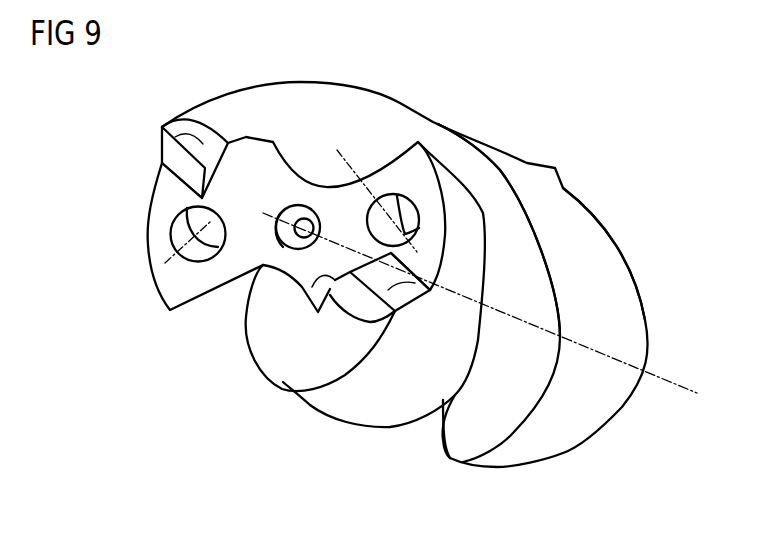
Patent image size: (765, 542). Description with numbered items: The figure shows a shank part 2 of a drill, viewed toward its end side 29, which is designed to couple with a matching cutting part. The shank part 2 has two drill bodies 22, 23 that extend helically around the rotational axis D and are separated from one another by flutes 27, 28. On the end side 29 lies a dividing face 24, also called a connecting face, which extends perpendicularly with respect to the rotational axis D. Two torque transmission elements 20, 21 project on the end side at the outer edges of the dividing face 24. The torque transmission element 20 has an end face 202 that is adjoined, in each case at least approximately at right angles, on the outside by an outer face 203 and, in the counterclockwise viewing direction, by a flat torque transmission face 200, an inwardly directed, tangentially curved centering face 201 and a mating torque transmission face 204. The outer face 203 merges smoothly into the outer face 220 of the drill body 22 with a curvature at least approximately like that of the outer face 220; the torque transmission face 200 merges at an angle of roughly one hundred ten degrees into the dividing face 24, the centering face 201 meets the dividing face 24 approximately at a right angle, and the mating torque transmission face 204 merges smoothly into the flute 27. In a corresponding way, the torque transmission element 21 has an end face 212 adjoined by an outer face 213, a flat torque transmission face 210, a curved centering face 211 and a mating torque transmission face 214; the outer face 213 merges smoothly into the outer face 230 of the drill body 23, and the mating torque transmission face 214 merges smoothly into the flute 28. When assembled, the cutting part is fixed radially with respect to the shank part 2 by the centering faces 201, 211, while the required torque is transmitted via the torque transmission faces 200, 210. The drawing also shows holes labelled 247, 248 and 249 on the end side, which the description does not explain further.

The shank part 2 is at (590, 147).
The torque transmission element 20 is at (311, 387).
The torque transmission face 200 is at (423, 293).
The centering face 201 is at (305, 302).
The end face 202 is at (311, 372).
The outer face 203 is at (395, 315).
The mating torque transmission face 204 is at (341, 343).
The torque transmission element 21 is at (156, 226).
The torque transmission face 210 is at (190, 168).
The centering face 211 is at (222, 162).
The end face 212 is at (205, 236).
The outer face 213 is at (163, 124).
The mating torque transmission face 214 is at (213, 120).
The drill body 22 is at (421, 276).
The outer face 220 is at (457, 230).
The drill body 23 is at (482, 148).
The outer face 230 is at (580, 263).
The dividing face 24 is at (163, 242).
The second coolant channel 247 is at (400, 217).
The central bore 248 is at (287, 249).
The coolant channel inner wall 249 is at (202, 261).
The flute 27 is at (268, 287).
The flute 28 is at (520, 297).
The end side 29 is at (138, 247).
The rotational axis D is at (677, 384).